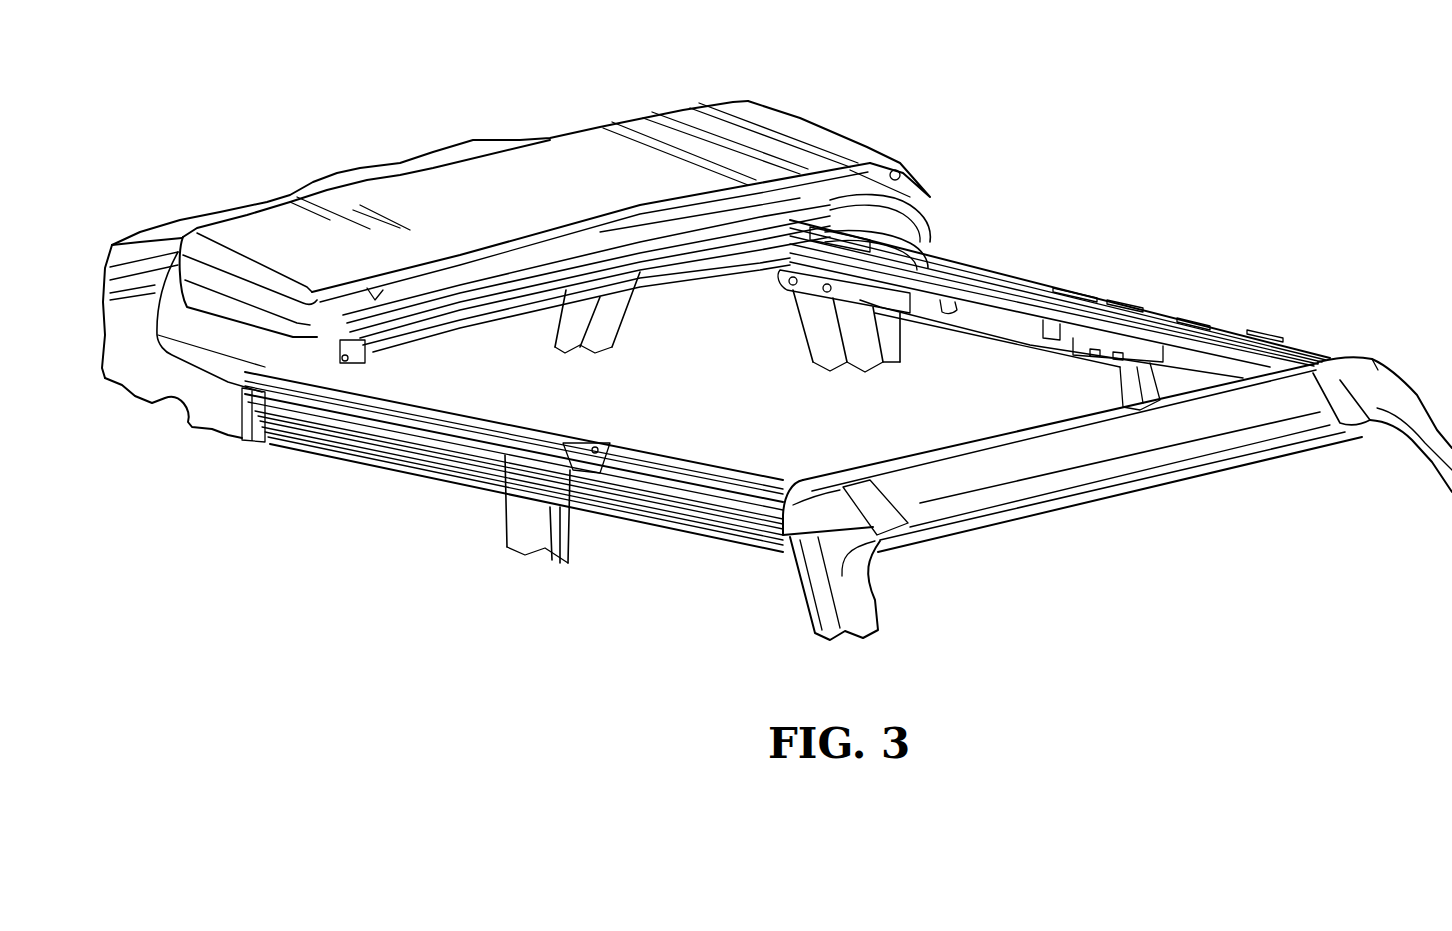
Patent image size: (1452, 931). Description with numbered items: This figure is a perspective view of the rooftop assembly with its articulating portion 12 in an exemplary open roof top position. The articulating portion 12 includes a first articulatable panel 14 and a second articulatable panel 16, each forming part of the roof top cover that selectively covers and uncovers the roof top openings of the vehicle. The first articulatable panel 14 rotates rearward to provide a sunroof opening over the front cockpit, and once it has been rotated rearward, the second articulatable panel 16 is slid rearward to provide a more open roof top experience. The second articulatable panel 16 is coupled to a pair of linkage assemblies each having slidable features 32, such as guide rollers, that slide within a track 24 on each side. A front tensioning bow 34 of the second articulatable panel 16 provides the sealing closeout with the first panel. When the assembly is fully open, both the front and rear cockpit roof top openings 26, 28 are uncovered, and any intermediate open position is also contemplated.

The articulating portion 12 is at (193, 366).
The first articulatable panel 14 is at (827, 147).
The second articulatable panel 16 is at (827, 187).
The track 24 is at (1020, 278).
The front cockpit roof top opening 26 is at (851, 428).
The rear cockpit roof top opening 28 is at (413, 376).
The slidable feature 32 is at (913, 242).
The front tensioning bow 34 is at (897, 212).